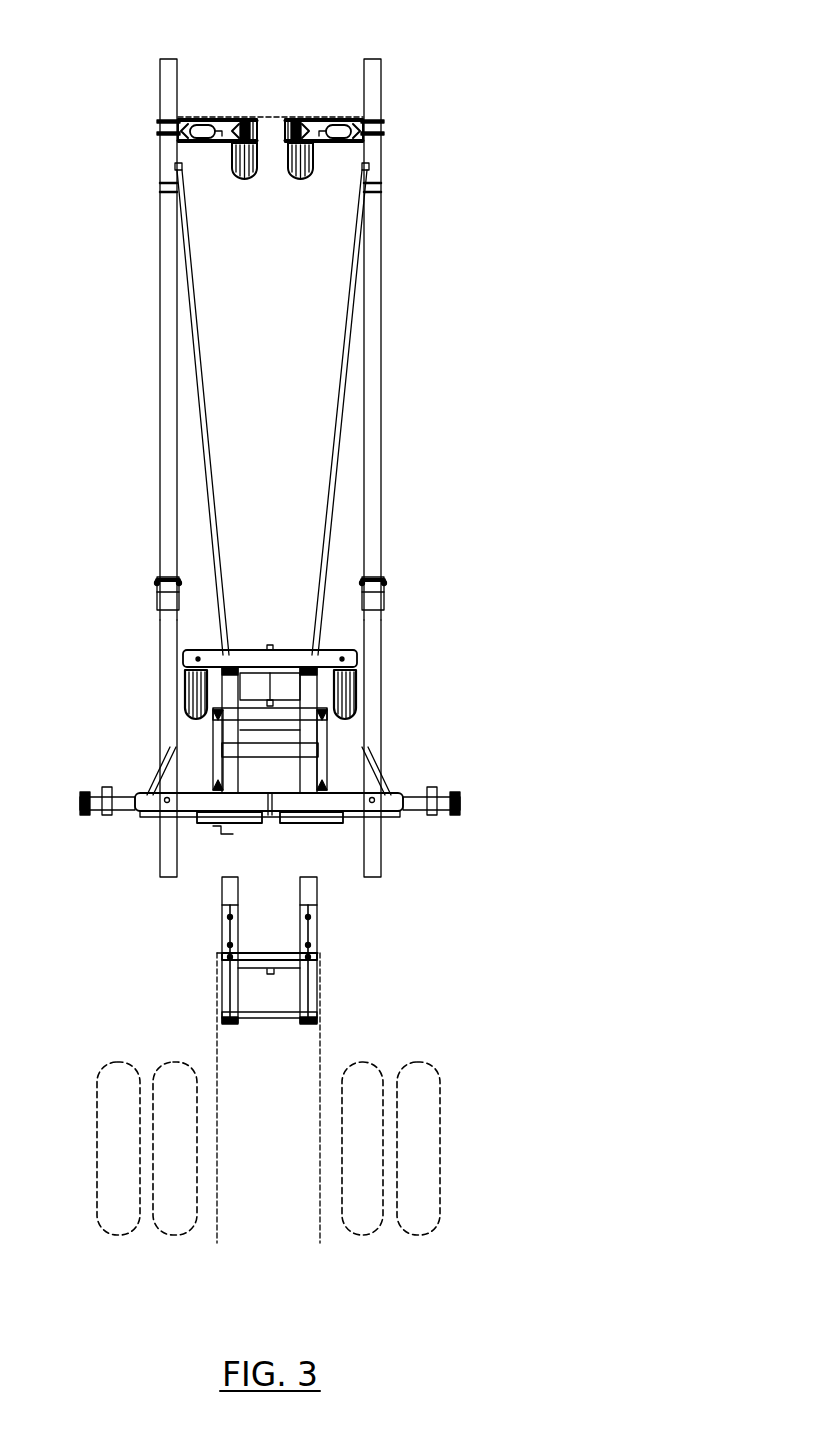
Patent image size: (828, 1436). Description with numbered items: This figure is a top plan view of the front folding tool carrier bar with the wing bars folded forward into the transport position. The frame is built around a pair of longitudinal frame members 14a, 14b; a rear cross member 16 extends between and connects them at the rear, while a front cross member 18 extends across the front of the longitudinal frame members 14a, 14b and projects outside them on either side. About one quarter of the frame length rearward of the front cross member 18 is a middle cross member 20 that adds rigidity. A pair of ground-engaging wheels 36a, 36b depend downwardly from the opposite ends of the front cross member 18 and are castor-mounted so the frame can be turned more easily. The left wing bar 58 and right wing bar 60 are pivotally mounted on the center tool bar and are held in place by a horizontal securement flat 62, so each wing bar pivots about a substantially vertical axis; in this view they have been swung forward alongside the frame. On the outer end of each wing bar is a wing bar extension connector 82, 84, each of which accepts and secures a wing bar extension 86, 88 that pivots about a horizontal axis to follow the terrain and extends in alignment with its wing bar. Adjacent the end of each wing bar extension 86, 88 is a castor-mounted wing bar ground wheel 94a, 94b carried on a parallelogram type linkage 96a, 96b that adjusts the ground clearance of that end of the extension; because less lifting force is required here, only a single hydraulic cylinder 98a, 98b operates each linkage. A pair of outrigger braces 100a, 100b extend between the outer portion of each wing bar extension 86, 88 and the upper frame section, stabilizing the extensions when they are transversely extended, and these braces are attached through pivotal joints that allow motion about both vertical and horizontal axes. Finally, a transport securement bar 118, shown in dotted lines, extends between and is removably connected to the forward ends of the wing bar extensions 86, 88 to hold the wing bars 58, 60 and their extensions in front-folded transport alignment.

The longitudinal frame member 14a is at (218, 895).
The longitudinal frame member 14b is at (320, 895).
The rear cross member 16 is at (287, 968).
The front cross member 18 is at (337, 658).
The middle cross member 20 is at (277, 752).
The ground-engaging wheel 36a is at (190, 717).
The ground-engaging wheel 36b is at (338, 720).
The left wing bar 58 is at (163, 700).
The right wing bar 60 is at (377, 705).
The horizontal securement flat 62 is at (343, 802).
The wing bar extension connector 82 is at (158, 600).
The wing bar extension connector 84 is at (383, 602).
The wing bar extension 86 is at (167, 237).
The wing bar extension 88 is at (378, 237).
The wing bar ground wheel 94a is at (240, 182).
The wing bar ground wheel 94b is at (302, 182).
The parallelogram type linkage 96a is at (223, 140).
The parallelogram type linkage 96b is at (322, 140).
The hydraulic cylinder 98a is at (203, 117).
The hydraulic cylinder 98b is at (342, 117).
The outrigger brace 100a is at (188, 322).
The outrigger brace 100b is at (353, 322).
The transport securement bar 118 is at (272, 115).